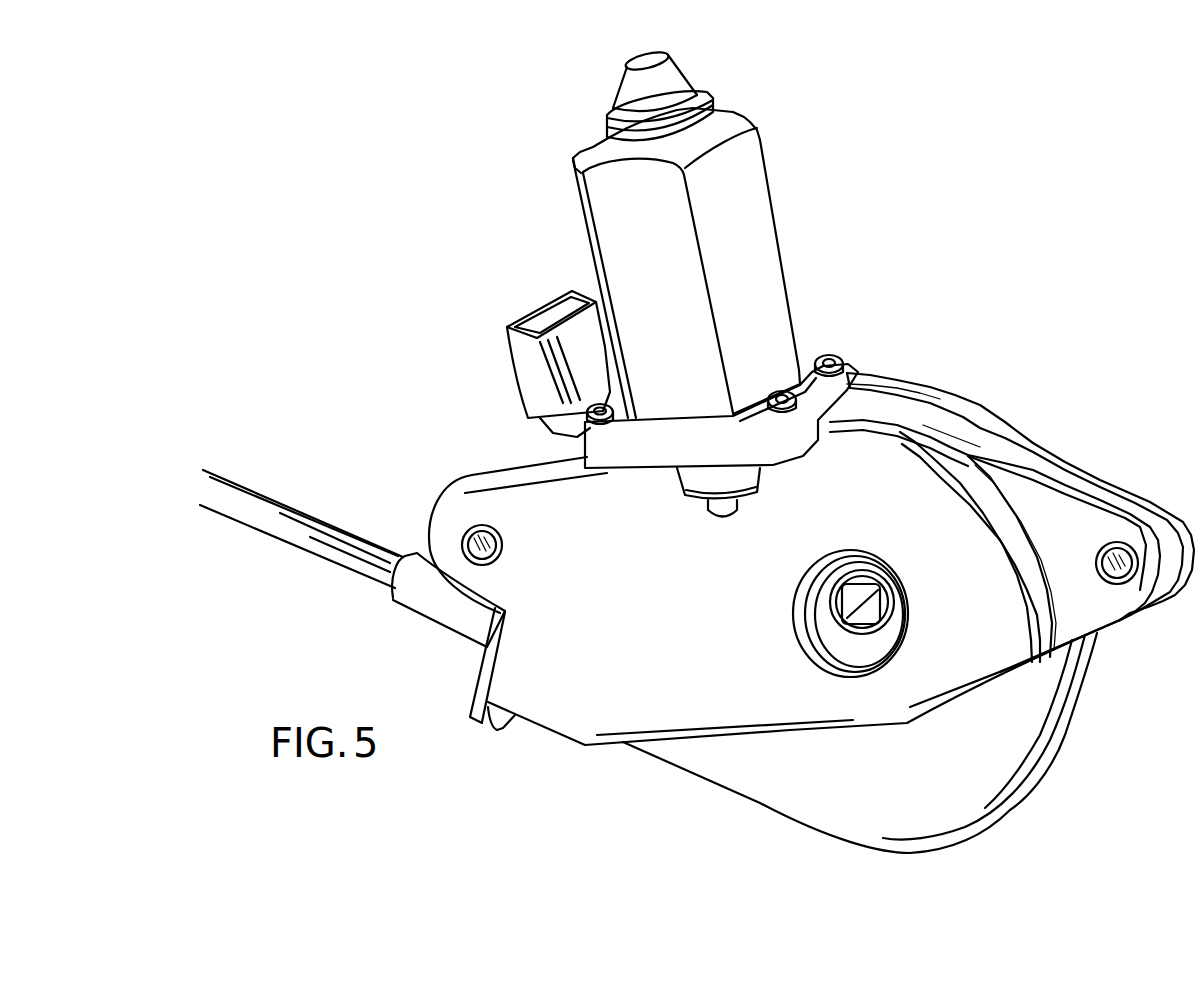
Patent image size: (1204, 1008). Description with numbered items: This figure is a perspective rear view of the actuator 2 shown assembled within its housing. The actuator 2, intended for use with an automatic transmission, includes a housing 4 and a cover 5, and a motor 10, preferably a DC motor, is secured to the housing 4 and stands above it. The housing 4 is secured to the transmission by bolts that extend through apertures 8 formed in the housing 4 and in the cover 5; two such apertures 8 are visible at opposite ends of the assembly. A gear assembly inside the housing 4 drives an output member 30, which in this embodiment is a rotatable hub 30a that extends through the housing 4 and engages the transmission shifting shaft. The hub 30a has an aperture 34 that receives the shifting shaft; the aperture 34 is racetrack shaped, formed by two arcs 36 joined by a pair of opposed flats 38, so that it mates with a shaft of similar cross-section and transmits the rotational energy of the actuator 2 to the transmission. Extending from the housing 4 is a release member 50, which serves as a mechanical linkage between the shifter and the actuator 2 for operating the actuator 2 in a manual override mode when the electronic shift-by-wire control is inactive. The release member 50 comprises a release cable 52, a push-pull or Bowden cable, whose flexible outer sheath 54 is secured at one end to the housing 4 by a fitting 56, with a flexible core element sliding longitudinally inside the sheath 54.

The actuator 2 is at (970, 232).
The housing 4 is at (585, 733).
The cover 5 is at (912, 385).
The apertures 8 is at (468, 533).
The motor 10 is at (772, 255).
The output member 30 is at (838, 655).
The rotatable hub 30a is at (830, 607).
The aperture 34 is at (867, 618).
The arcs 36 is at (855, 578).
The opposed flats 38 is at (1095, 652).
The release member 50 is at (353, 611).
The release cable 52 is at (277, 540).
The flexible outer sheath 54 is at (270, 507).
The fitting 56 is at (423, 607).